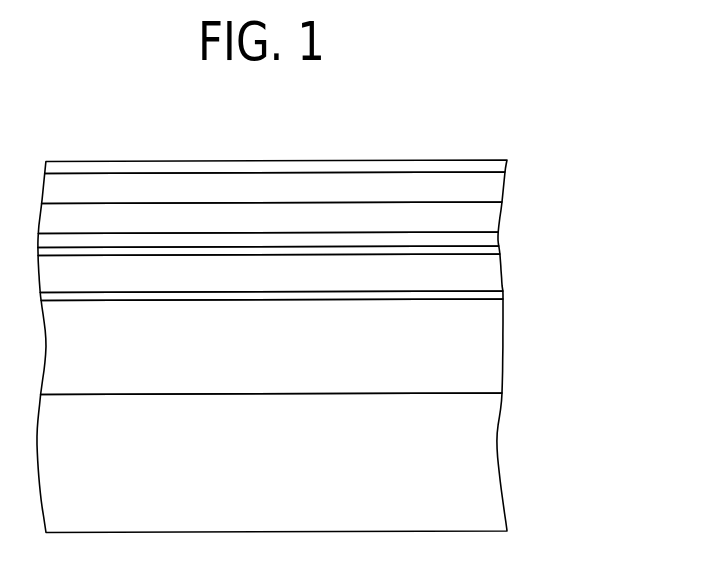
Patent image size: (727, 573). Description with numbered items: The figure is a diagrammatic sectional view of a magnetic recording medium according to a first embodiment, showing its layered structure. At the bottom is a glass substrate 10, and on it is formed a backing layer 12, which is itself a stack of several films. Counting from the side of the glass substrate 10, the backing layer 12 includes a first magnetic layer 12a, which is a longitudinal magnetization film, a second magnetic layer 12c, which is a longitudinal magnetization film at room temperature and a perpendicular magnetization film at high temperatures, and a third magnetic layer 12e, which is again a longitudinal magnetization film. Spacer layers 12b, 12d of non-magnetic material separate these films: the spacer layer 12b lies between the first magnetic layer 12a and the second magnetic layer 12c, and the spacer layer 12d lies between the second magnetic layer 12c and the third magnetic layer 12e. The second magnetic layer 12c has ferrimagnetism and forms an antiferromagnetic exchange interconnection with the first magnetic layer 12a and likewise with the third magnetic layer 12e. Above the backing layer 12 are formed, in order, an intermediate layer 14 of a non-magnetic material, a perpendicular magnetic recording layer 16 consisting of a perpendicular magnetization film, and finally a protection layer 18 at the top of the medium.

The glass substrate 10 is at (488, 462).
The backing layer 12 is at (340, 300).
The first magnetic layer 12a is at (308, 347).
The spacer layer 12b is at (495, 295).
The second magnetic layer 12c is at (488, 273).
The spacer layer 12d is at (492, 247).
The third magnetic layer 12e is at (492, 235).
The intermediate layer 14 is at (488, 213).
The perpendicular magnetic recording layer 16 is at (493, 182).
The protection layer 18 is at (495, 167).